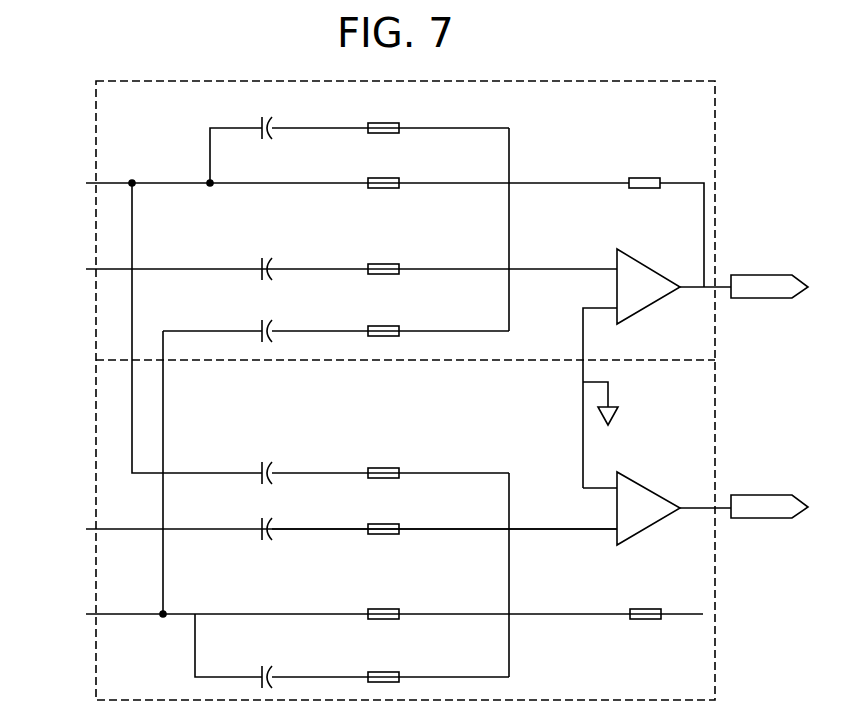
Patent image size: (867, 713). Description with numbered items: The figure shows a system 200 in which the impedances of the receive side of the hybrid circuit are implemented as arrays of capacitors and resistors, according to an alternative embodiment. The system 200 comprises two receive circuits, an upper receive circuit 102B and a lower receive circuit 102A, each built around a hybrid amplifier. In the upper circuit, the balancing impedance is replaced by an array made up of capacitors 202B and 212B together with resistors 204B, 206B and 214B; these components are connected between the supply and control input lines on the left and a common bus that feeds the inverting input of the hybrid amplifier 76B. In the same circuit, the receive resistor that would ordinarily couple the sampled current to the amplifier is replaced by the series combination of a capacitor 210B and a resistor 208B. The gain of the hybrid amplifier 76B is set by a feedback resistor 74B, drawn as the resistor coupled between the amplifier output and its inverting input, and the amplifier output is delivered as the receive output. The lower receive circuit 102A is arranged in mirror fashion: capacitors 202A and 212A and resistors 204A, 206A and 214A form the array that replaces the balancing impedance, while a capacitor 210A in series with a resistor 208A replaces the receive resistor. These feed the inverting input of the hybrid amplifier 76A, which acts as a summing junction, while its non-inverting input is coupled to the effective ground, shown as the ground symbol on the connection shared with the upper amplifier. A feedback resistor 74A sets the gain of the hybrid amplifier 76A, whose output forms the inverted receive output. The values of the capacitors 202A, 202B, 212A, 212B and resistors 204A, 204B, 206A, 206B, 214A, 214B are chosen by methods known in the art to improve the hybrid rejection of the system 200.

The system 200 is at (756, 127).
The receive circuit 102B is at (94, 128).
The receive circuit 102A is at (94, 432).
The capacitor 202B is at (272, 125).
The resistor 204B is at (386, 124).
The resistor 206B is at (386, 179).
The resistor 208B is at (386, 265).
The capacitor 210B is at (272, 266).
The capacitor 212B is at (272, 328).
The resistor 214B is at (386, 327).
The feedback resistor 74B is at (646, 188).
The hybrid amplifier 76B is at (638, 260).
The capacitor 202A is at (272, 675).
The resistor 204A is at (386, 673).
The resistor 206A is at (386, 610).
The resistor 208A is at (386, 525).
The capacitor 210A is at (272, 526).
The capacitor 212A is at (272, 470).
The resistor 214A is at (386, 469).
The feedback resistor 74A is at (645, 618).
The hybrid amplifier 76A is at (635, 483).